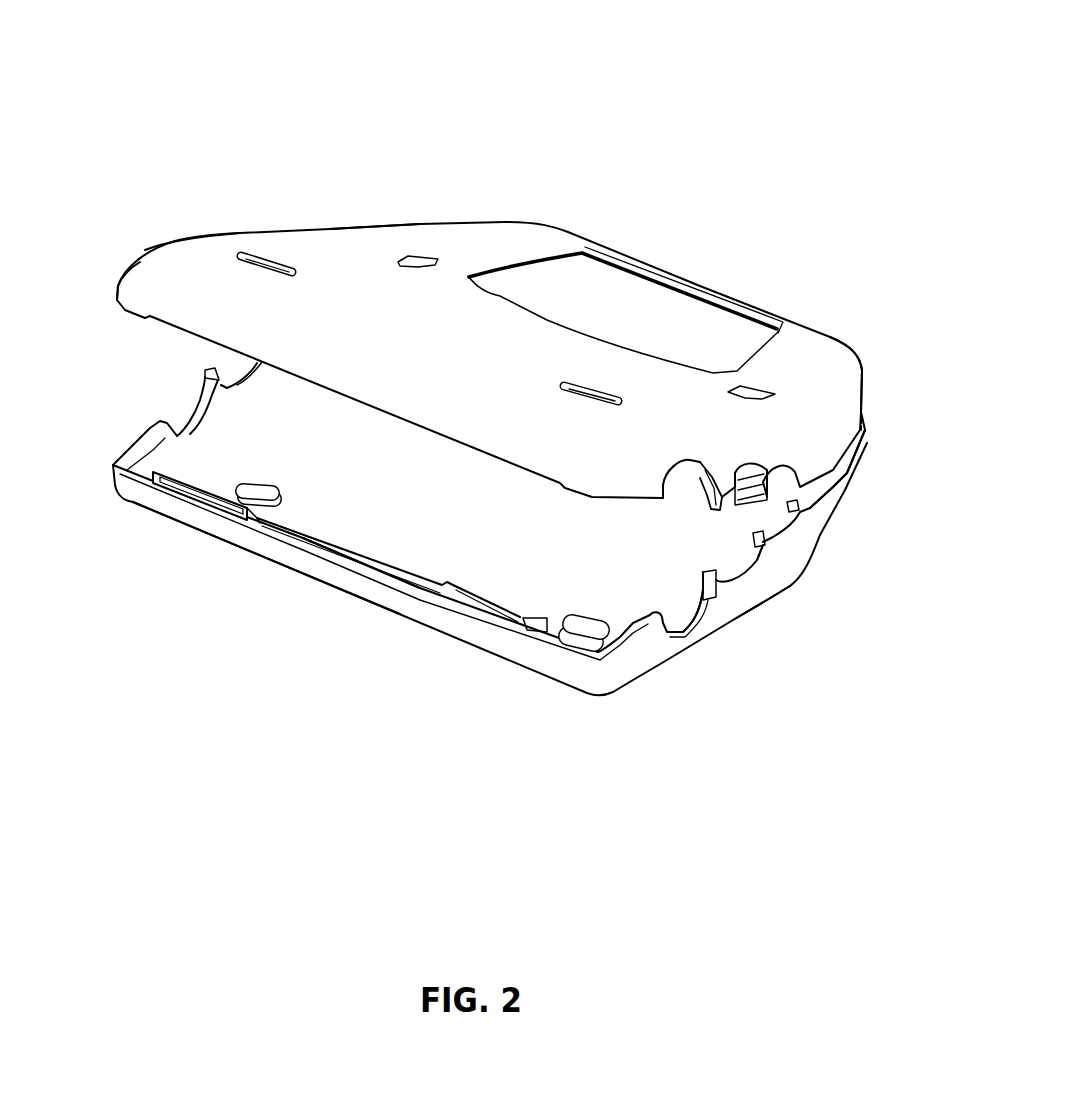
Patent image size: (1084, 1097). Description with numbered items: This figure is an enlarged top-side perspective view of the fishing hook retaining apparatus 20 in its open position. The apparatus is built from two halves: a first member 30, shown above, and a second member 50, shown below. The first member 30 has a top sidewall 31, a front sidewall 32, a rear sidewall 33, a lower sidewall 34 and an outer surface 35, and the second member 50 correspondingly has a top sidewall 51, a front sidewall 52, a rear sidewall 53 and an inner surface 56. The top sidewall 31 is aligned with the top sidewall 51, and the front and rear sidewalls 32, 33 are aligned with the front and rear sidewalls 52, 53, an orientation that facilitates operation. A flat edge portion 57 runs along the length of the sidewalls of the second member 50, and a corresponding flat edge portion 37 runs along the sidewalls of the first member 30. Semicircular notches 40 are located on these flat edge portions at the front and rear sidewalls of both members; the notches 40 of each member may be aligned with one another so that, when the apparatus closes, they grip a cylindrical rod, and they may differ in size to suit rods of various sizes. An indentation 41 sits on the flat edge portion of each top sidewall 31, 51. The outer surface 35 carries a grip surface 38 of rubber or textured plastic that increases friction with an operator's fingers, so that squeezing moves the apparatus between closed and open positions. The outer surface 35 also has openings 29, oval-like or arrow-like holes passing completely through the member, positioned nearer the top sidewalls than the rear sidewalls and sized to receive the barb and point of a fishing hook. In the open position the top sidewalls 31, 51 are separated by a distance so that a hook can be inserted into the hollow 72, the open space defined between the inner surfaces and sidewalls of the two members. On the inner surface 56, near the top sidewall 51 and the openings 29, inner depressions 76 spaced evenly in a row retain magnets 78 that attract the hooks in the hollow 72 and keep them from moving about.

The fishing hook retaining apparatus 20 is at (680, 138).
The openings 29 is at (585, 623).
The first member 30 is at (161, 236).
The top sidewall 31 is at (167, 307).
The front sidewall 32 is at (810, 447).
The rear sidewall 33 is at (203, 236).
The lower sidewall 34 is at (690, 282).
The outer surface 35 is at (362, 300).
The flat edge portion 37 is at (700, 468).
The grip surface 38 is at (582, 297).
The notches 40 is at (182, 423).
The indentation 41 is at (432, 437).
The second member 50 is at (607, 722).
The top sidewall 51 is at (367, 473).
The front sidewall 52 is at (827, 498).
The rear sidewall 53 is at (128, 455).
The inner surface 56 is at (316, 553).
The flat edge portion 57 is at (612, 490).
The hollow 72 is at (485, 488).
The inner depressions 76 is at (197, 503).
The magnets 78 is at (165, 497).